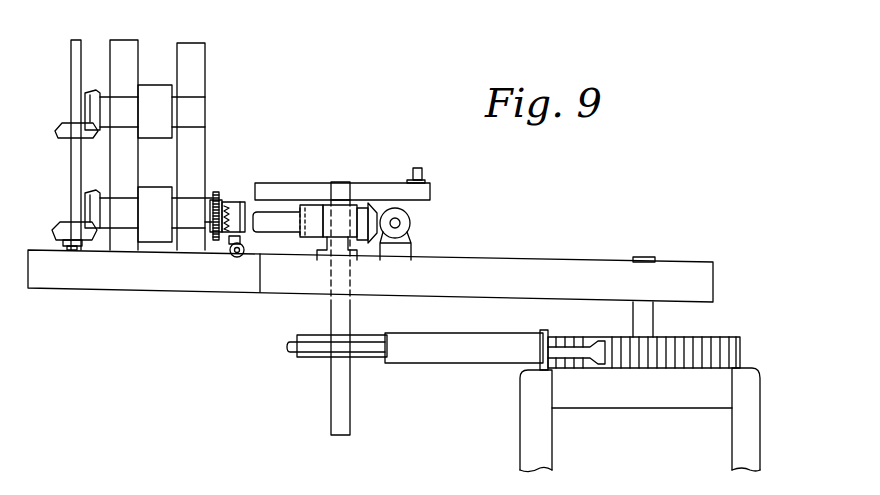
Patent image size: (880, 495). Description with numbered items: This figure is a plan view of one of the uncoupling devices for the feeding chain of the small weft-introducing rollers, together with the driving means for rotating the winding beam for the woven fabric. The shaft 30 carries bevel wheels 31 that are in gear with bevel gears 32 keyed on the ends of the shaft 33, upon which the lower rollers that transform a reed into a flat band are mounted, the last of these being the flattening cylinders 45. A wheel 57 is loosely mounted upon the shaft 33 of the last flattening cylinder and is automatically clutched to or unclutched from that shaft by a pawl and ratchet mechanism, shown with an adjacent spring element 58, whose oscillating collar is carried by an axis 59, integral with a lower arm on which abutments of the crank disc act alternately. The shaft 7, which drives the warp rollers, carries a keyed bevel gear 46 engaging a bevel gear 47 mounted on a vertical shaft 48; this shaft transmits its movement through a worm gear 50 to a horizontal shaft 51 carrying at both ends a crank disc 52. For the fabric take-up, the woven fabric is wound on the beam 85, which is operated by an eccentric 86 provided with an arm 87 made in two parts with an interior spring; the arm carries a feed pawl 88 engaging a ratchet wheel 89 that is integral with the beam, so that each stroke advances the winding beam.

The shaft 7 is at (276, 212).
The shaft 30 is at (71, 81).
The bevel wheels 31 is at (62, 131).
The bevel gears 32 is at (92, 92).
The shaft 33 is at (204, 205).
The flattening cylinders 45 is at (155, 163).
The bevel gear 46 is at (373, 203).
The bevel gear 47 is at (411, 232).
The vertical shaft 48 is at (400, 223).
The worm gear 50 is at (311, 205).
The horizontal shaft 51 is at (332, 412).
The crank disc 52 is at (430, 190).
The wheel 57 is at (215, 242).
The spring 58 is at (228, 205).
The axis 59 is at (235, 258).
The beam 85 is at (748, 443).
The eccentric 86 is at (365, 348).
The arm 87 is at (479, 357).
The feed pawl 88 is at (598, 358).
The ratchet wheel 89 is at (742, 351).